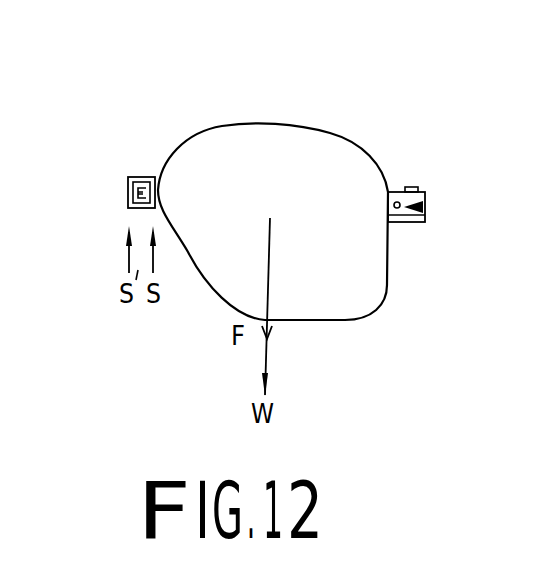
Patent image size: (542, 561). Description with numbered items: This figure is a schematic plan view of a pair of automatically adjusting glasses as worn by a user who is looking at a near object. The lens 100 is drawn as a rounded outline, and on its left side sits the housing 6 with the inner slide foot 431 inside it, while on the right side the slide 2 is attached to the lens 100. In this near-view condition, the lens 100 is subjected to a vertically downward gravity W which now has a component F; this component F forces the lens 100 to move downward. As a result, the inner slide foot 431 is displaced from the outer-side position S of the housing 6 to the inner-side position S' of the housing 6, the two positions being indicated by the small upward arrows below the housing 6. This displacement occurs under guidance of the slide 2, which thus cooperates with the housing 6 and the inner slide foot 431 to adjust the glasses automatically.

The lens 100 is at (210, 140).
The inner slide foot 431 is at (128, 183).
The housing 6 is at (128, 195).
The slide 2 is at (423, 202).